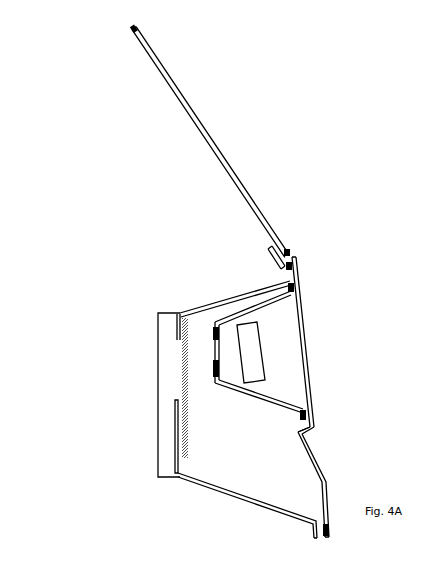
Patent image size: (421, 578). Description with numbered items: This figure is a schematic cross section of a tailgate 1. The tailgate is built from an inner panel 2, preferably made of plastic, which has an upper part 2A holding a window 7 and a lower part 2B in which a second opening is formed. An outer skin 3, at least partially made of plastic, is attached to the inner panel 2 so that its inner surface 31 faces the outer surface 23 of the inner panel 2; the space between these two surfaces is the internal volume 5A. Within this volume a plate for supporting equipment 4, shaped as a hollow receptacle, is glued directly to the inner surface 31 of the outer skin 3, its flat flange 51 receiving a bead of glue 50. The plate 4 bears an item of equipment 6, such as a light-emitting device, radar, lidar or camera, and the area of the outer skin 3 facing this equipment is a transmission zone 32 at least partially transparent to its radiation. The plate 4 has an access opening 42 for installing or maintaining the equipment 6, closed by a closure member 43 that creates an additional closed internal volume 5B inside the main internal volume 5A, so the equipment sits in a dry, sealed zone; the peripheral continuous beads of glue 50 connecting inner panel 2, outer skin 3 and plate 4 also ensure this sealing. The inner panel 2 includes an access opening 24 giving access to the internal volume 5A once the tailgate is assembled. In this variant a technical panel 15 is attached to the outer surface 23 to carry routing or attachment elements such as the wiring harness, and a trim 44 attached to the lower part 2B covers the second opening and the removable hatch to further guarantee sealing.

The tailgate 1 is at (95, 102).
The window 7 is at (206, 121).
The upper part 2A is at (157, 147).
The outer surface 23 is at (246, 297).
The outer skin 3 is at (298, 295).
The bead of glue 50 is at (291, 251).
The additional closed internal volume 5B is at (282, 315).
The transmission zone 32 is at (314, 342).
The access opening 24 is at (175, 363).
The technical panel 15 is at (183, 390).
The trim 44 is at (157, 425).
The closure member 43 is at (213, 328).
The item of equipment 6 is at (265, 360).
The access opening 42 is at (229, 369).
The flat flange 51 is at (311, 430).
The plate for supporting equipment 4 is at (310, 433).
The inner surface 31 is at (312, 477).
The lower part 2B is at (130, 448).
The internal volume 5A is at (222, 475).
The inner panel 2 is at (241, 502).